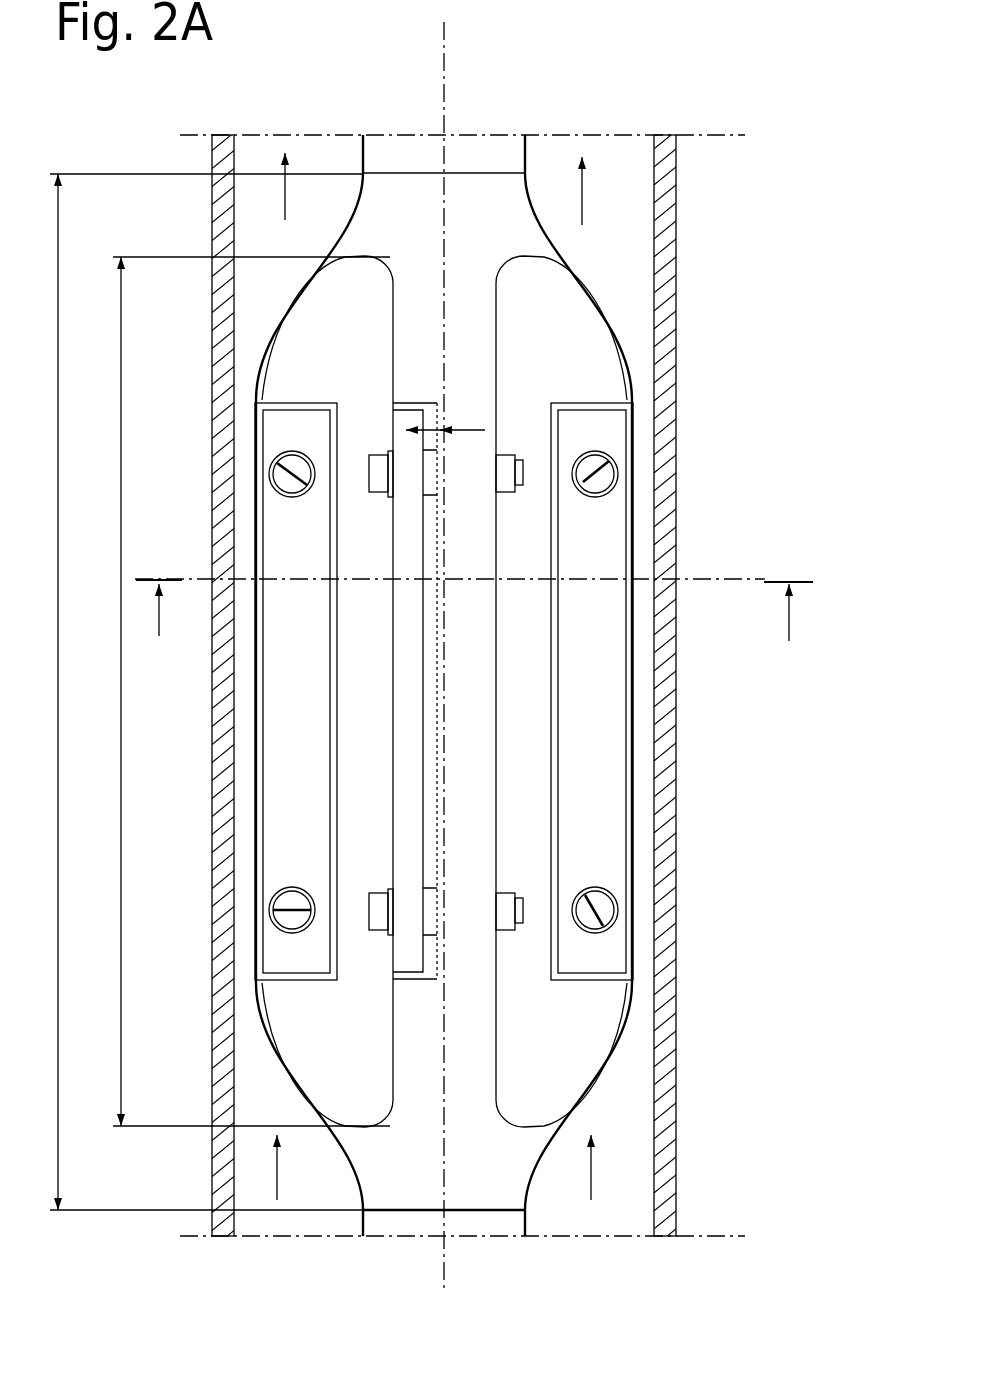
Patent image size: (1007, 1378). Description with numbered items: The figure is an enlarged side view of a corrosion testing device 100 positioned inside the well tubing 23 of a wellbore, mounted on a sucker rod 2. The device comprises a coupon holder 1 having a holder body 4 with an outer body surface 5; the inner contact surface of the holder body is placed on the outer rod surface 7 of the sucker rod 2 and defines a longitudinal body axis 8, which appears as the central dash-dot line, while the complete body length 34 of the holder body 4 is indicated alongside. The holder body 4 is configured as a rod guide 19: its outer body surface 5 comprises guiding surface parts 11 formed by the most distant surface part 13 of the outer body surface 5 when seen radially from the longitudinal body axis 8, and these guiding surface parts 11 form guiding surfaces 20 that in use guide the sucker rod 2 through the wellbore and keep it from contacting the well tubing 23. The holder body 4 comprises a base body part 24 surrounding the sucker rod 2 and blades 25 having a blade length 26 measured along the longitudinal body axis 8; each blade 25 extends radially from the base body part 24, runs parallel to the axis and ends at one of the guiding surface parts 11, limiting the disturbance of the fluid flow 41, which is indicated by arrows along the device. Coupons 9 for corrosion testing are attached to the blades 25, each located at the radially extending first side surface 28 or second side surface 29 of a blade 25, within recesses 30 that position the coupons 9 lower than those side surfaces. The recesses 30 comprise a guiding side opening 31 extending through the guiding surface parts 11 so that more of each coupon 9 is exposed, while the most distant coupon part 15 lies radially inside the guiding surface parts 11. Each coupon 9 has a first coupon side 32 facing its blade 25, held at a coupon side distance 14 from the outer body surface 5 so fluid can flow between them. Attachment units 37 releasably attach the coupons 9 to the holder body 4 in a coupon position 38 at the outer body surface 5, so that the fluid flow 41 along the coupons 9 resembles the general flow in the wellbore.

The corrosion testing device 100 is at (419, 644).
The coupon holder 1 is at (440, 644).
The sucker rod 2 is at (498, 147).
The holder body 4 is at (340, 247).
The outer body surface 5 is at (445, 684).
The outer rod surface 7 is at (362, 162).
The longitudinal body axis 8 is at (444, 90).
The coupon 9 is at (278, 691).
The guiding surface part 11 is at (688, 691).
The most distant surface part 13 is at (637, 619).
The coupon side distance 14 is at (446, 415).
The most distant coupon part 15 is at (630, 770).
The rod guide 19 is at (286, 291).
The guiding surface 20 is at (472, 527).
The well tubing 23 is at (209, 464).
The base body part 24 is at (560, 1127).
The blade 25 is at (385, 1047).
The blade length 26 is at (240, 691).
The first side surface 28 is at (385, 1015).
The second side surface 29 is at (498, 1027).
The recess 30 is at (450, 691).
The guiding side opening 31 is at (427, 728).
The first coupon side 32 is at (390, 714).
The body length 34 is at (192, 692).
The attachment unit 37 is at (598, 490).
The coupon position 38 is at (290, 857).
The fluid flow 41 is at (285, 190).